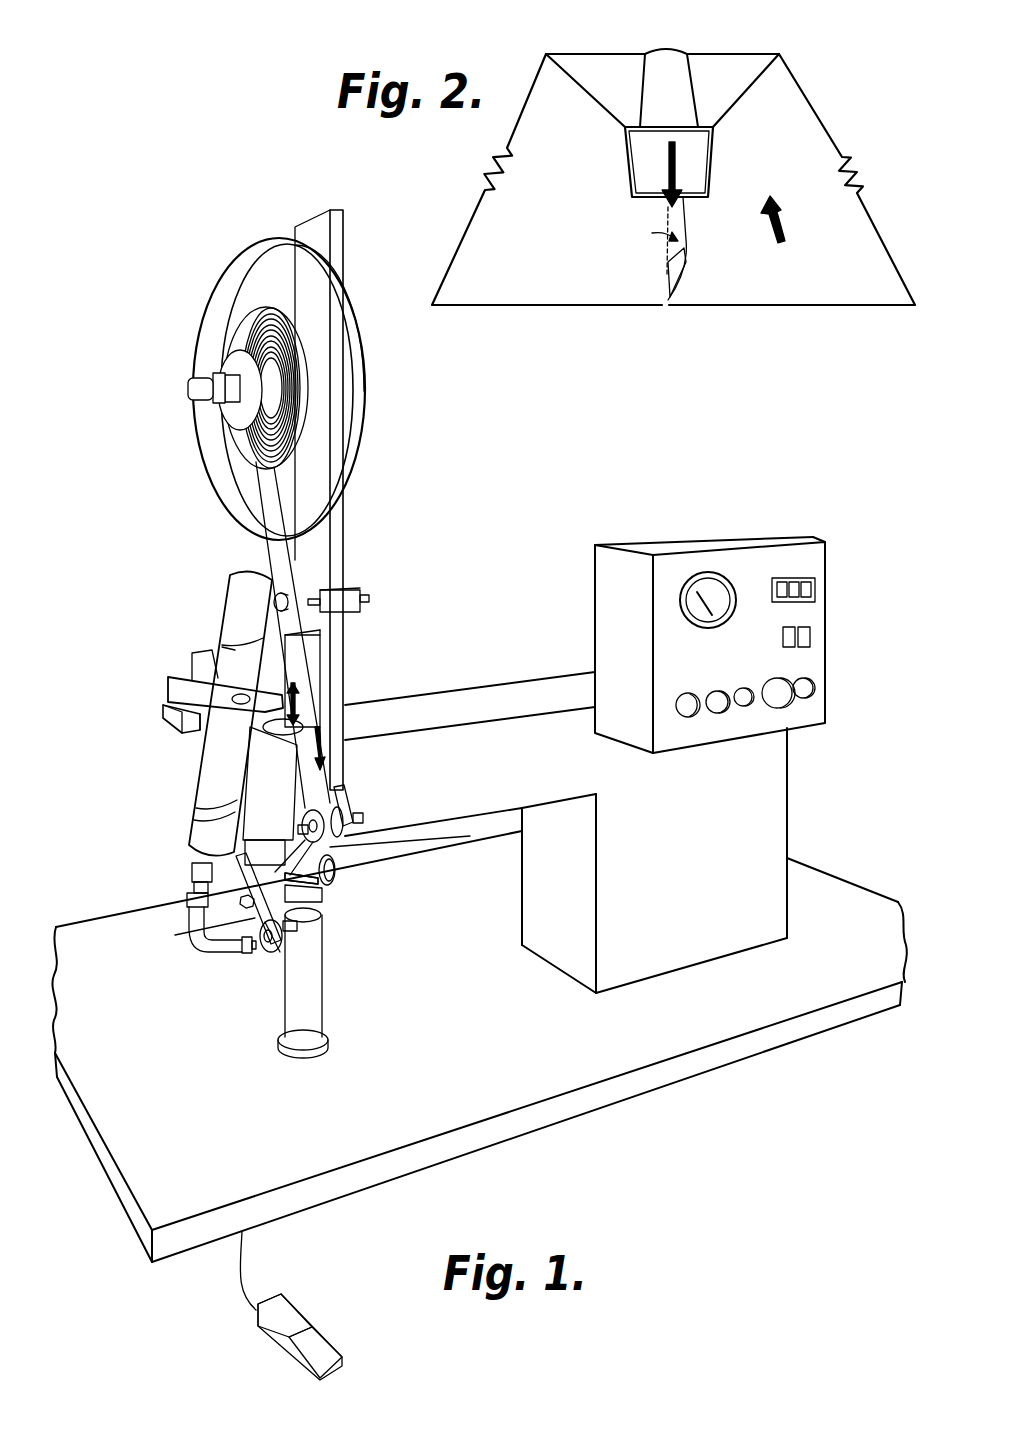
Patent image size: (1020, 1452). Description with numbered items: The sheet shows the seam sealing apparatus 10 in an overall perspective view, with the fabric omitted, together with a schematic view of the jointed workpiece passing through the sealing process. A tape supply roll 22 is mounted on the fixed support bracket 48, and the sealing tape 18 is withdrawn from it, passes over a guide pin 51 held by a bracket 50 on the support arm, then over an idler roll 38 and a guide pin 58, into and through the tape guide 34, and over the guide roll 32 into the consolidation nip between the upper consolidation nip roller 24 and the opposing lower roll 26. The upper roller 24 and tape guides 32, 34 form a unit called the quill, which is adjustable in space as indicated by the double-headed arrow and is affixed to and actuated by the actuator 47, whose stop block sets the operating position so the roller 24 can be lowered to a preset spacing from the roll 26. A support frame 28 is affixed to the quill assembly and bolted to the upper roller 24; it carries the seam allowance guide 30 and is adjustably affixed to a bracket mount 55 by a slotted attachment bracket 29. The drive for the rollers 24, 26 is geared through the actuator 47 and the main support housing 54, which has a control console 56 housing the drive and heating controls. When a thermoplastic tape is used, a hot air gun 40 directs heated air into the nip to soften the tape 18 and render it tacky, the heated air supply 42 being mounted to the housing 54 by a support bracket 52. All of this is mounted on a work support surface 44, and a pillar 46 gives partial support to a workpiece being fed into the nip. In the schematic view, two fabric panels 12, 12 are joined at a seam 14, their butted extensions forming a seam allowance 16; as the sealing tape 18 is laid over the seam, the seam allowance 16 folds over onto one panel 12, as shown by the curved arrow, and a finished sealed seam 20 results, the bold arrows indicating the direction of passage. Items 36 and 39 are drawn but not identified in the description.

In FIG. 1, the apparatus 10 is at (100, 642).
In FIG. 2, the fabric panels 12 is at (575, 252).
In FIG. 2, the seam 14 is at (668, 252).
In FIG. 2, the seam allowance 16 is at (682, 280).
In FIG. 2, the sealing tape 18 is at (693, 165).
In FIG. 1, the sealing tape 18 is at (310, 673).
In FIG. 2, the sealed seam 20 is at (638, 103).
In FIG. 1, the tape supply roll 22 is at (252, 292).
In FIG. 1, the upper consolidation nip roller 24 is at (290, 928).
In FIG. 1, the lower roll 26 is at (278, 953).
In FIG. 1, the support frame 28 is at (190, 928).
In FIG. 1, the slotted attachment bracket 29 is at (240, 897).
In FIG. 1, the seam allowance guide 30 is at (278, 952).
In FIG. 1, the guide roll 32 is at (290, 898).
In FIG. 1, the tape guide 34 is at (303, 885).
In FIG. 1, the foot pedal 36 is at (297, 1320).
In FIG. 1, the idler roll 38 is at (215, 772).
In FIG. 1, the guide arm 39 is at (342, 797).
In FIG. 1, the hot air gun 40 is at (236, 954).
In FIG. 1, the heated air supply 42 is at (220, 760).
In FIG. 1, the work support surface 44 is at (598, 1050).
In FIG. 1, the pillar 46 is at (308, 1018).
In FIG. 1, the actuator 47 is at (260, 657).
In FIG. 1, the support bracket 48 is at (323, 547).
In FIG. 1, the bracket 50 is at (348, 598).
In FIG. 1, the guide pin 51 is at (347, 547).
In FIG. 1, the support bracket 52 is at (180, 687).
In FIG. 1, the main support housing 54 is at (716, 800).
In FIG. 1, the bracket mount 55 is at (233, 808).
In FIG. 1, the control console 56 is at (748, 580).
In FIG. 1, the guide pin 58 is at (340, 867).